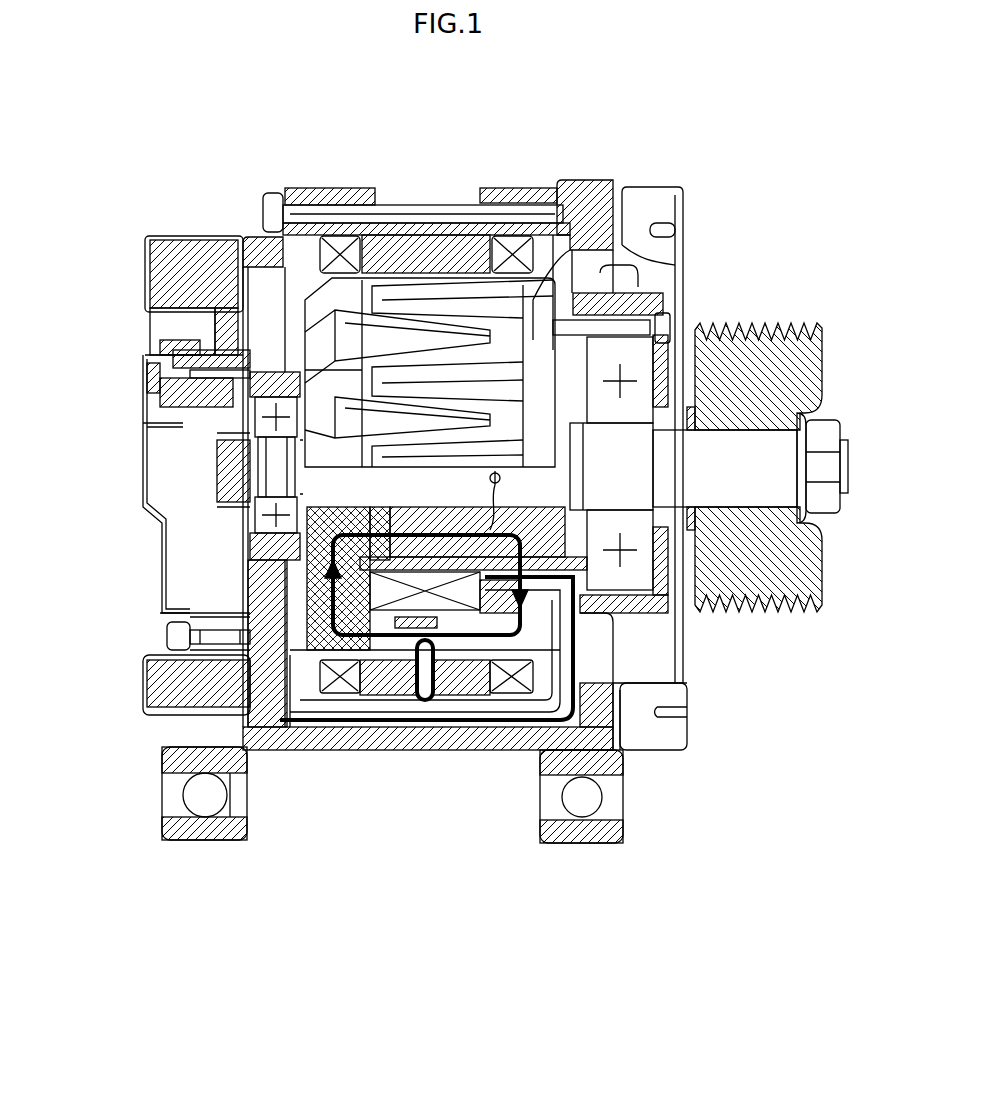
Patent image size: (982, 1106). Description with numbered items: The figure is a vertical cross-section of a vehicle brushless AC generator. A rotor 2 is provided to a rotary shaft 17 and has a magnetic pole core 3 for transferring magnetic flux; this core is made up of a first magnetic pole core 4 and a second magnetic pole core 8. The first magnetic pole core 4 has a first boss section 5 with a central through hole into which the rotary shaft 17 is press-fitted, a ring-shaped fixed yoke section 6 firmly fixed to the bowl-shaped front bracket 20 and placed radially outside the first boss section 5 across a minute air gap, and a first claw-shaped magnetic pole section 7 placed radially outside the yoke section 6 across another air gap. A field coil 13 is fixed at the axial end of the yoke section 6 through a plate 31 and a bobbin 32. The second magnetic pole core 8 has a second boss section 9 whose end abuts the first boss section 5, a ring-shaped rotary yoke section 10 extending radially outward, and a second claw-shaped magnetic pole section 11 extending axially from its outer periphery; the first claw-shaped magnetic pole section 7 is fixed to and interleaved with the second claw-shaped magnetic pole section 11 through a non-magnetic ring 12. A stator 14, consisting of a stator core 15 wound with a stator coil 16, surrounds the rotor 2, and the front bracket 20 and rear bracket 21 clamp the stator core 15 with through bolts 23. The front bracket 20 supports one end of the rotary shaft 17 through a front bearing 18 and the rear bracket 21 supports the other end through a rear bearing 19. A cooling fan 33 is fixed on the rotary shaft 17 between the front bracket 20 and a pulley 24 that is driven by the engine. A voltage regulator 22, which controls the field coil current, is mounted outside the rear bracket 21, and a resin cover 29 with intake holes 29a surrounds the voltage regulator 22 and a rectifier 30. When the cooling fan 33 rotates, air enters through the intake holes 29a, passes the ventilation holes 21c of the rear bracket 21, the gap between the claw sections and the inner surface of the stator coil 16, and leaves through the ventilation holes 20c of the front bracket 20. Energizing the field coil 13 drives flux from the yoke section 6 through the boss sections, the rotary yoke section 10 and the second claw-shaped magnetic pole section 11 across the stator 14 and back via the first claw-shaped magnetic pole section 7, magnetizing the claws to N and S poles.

The rotor 2 is at (533, 300).
The magnetic pole core 3 is at (382, 752).
The first magnetic pole core 4 is at (426, 765).
The first boss section 5 is at (475, 722).
The yoke section 6 is at (505, 695).
The first claw-shaped magnetic pole section 7 is at (548, 722).
The second magnetic pole core 8 is at (382, 730).
The second boss section 9 is at (305, 690).
The yoke section 10 is at (340, 680).
The second claw-shaped magnetic pole section 11 is at (390, 700).
The ring 12 is at (415, 612).
The field coil 13 is at (440, 700).
The stator 14 is at (426, 182).
The stator core 15 is at (395, 250).
The stator coil 16 is at (345, 253).
The rotary shaft 17 is at (720, 447).
The front bearing 18 is at (663, 310).
The rear bearing 19 is at (265, 420).
The front bracket 20 is at (678, 461).
The ventilation holes 20c is at (607, 273).
The rear bracket 21 is at (378, 486).
The ventilation holes 21c is at (245, 277).
The voltage regulator 22 is at (167, 710).
The through bolts 23 is at (448, 210).
The pulley 24 is at (743, 617).
The resin cover 29 is at (144, 535).
The intake holes 29a is at (163, 568).
The rectifier 30 is at (170, 268).
The plate 31 is at (372, 530).
The bobbin 32 is at (440, 530).
The cooling fan 33 is at (650, 750).